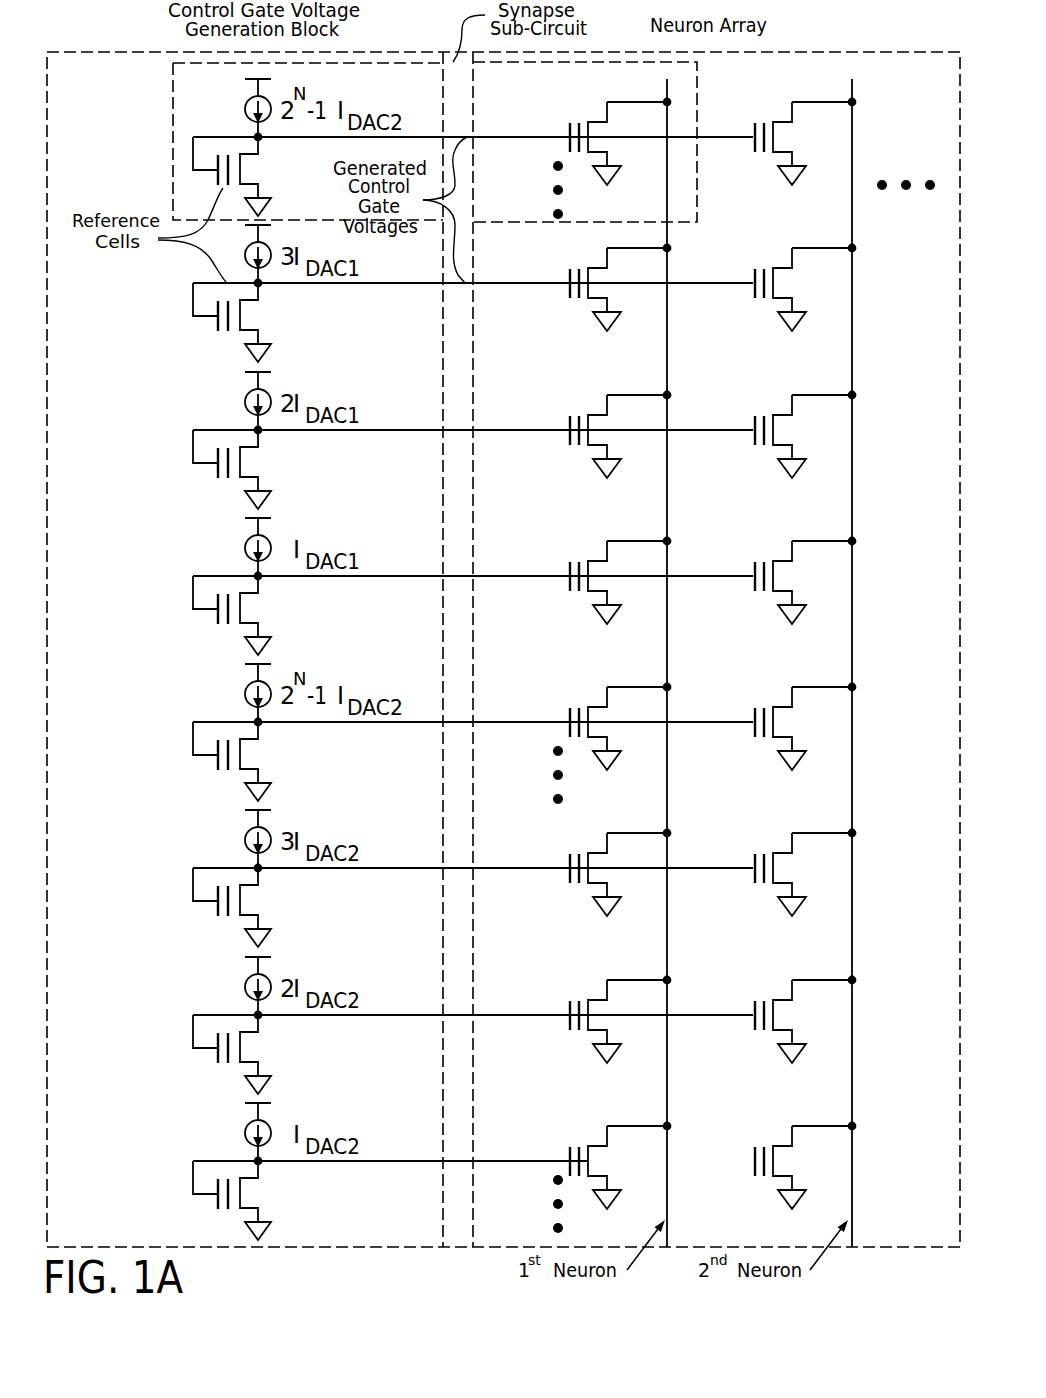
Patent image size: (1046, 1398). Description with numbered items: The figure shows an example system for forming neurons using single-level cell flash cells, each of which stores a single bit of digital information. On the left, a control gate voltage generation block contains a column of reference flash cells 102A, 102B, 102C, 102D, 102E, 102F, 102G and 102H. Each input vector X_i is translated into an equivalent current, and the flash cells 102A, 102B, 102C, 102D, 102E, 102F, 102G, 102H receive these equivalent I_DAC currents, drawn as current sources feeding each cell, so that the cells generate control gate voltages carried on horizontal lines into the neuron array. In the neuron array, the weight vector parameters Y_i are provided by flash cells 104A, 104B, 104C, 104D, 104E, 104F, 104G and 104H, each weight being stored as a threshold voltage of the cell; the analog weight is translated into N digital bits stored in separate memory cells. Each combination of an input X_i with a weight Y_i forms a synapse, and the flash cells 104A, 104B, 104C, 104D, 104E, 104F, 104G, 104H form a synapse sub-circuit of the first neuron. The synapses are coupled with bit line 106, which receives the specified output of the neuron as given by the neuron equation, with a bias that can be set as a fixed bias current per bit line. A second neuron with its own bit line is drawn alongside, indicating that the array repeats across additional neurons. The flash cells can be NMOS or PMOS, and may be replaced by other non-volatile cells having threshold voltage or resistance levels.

The flash cell 102A is at (193, 164).
The flash cell 102B is at (193, 310).
The flash cell 102C is at (193, 457).
The flash cell 102D is at (193, 603).
The flash cell 102E is at (193, 749).
The flash cell 102F is at (193, 895).
The flash cell 102G is at (193, 1042).
The flash cell 102H is at (193, 1188).
The flash cell 104A is at (607, 112).
The flash cell 104B is at (607, 258).
The flash cell 104C is at (607, 405).
The flash cell 104D is at (607, 551).
The flash cell 104E is at (607, 697).
The flash cell 104F is at (607, 843).
The flash cell 104G is at (607, 990).
The flash cell 104H is at (607, 1136).
The bit line 106 is at (667, 84).